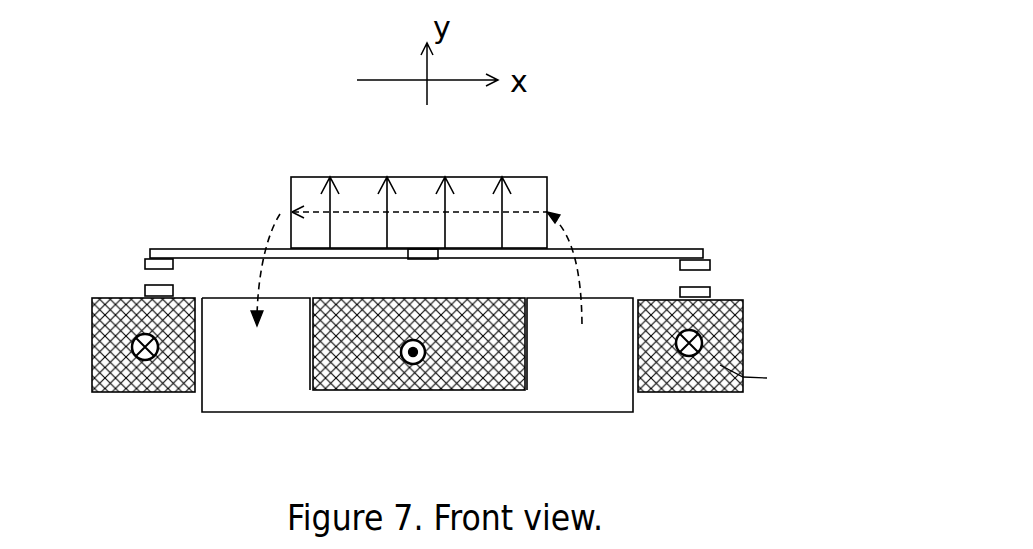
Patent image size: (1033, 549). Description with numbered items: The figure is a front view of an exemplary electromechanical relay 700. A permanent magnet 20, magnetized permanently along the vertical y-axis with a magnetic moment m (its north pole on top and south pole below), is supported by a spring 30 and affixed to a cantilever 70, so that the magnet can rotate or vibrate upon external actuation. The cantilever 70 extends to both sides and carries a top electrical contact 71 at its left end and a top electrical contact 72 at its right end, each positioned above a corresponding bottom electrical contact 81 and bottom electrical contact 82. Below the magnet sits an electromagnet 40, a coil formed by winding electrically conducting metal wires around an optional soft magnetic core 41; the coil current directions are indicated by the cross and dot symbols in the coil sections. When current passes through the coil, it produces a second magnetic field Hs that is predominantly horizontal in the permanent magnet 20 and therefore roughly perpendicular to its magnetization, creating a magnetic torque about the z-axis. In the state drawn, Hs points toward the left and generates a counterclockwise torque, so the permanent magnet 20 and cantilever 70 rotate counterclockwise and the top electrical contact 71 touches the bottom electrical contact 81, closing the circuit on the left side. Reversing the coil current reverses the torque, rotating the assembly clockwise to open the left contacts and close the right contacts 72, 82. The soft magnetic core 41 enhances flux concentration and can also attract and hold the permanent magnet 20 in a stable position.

The actuator assembly 700 is at (486, 254).
The permanent magnet 20 is at (479, 205).
The cantilever 70 is at (426, 228).
The spring 30 is at (471, 274).
The top electrical contact 71 is at (130, 245).
The top electrical contact 72 is at (728, 243).
The bottom electrical contact 81 is at (130, 285).
The bottom electrical contact 82 is at (727, 274).
The electromagnet 40 is at (488, 370).
The soft magnetic core 41 is at (451, 380).